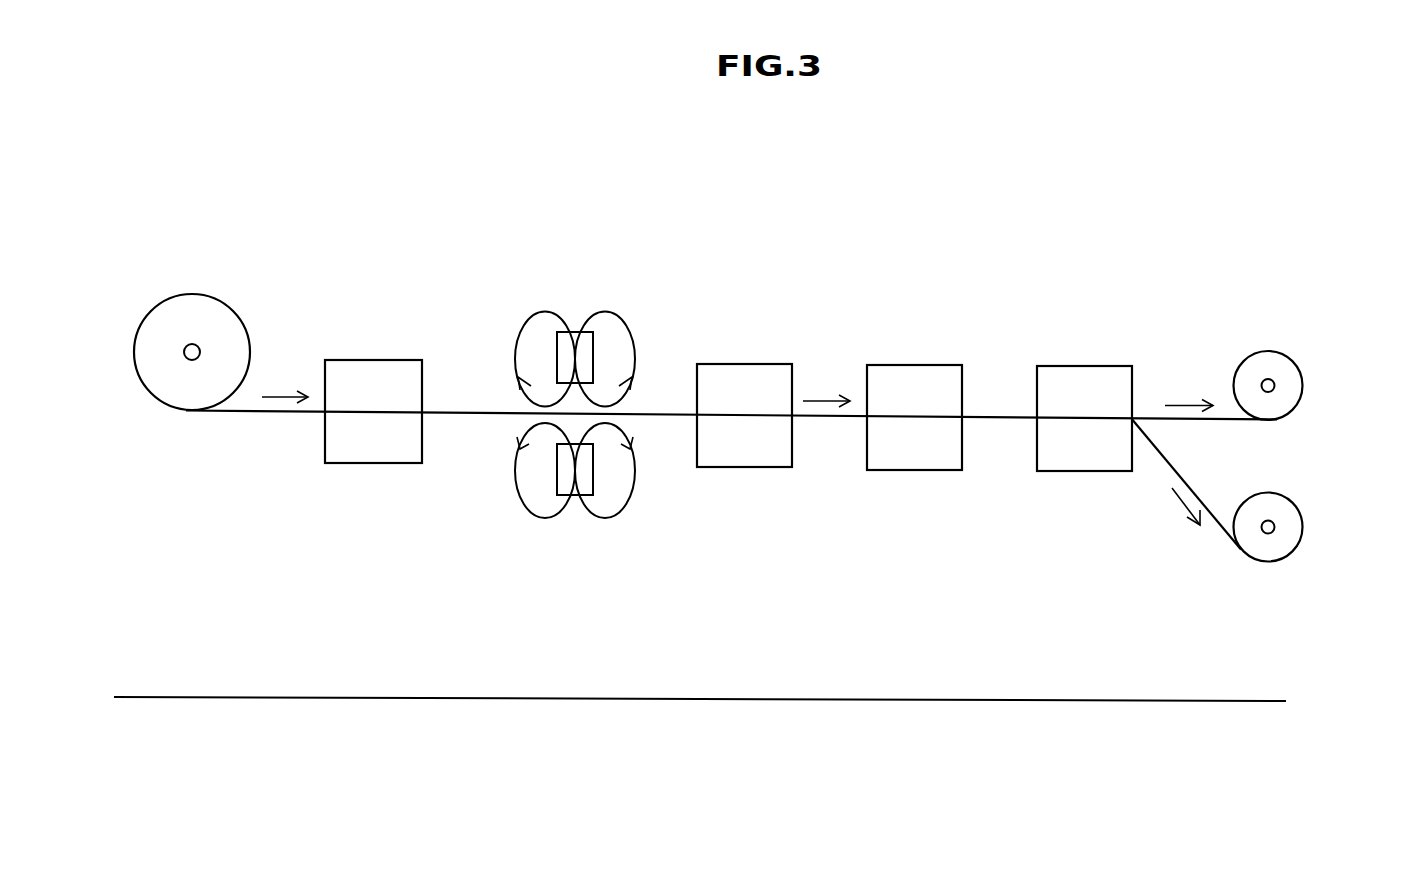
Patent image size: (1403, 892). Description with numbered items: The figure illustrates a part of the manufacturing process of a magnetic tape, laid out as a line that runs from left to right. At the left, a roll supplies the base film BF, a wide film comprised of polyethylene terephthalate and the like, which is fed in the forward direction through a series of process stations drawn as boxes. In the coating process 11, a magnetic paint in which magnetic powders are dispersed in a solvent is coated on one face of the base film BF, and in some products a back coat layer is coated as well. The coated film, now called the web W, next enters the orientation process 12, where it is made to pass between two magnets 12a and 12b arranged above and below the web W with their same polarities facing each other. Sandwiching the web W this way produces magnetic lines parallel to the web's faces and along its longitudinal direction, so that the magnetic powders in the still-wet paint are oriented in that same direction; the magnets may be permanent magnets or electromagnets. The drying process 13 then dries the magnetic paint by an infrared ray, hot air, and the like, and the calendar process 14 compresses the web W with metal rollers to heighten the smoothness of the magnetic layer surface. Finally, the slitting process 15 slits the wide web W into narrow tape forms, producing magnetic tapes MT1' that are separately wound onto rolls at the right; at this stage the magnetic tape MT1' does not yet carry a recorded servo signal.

The base film BF is at (172, 294).
The coating process 11 is at (353, 360).
The web W is at (458, 411).
The orientation process 12 is at (605, 381).
The magnet 12a is at (595, 342).
The magnet 12b is at (593, 485).
The drying process 13 is at (724, 364).
The calendar process 14 is at (893, 365).
The slitting process 15 is at (1065, 366).
The magnetic tape MT1' is at (1303, 470).